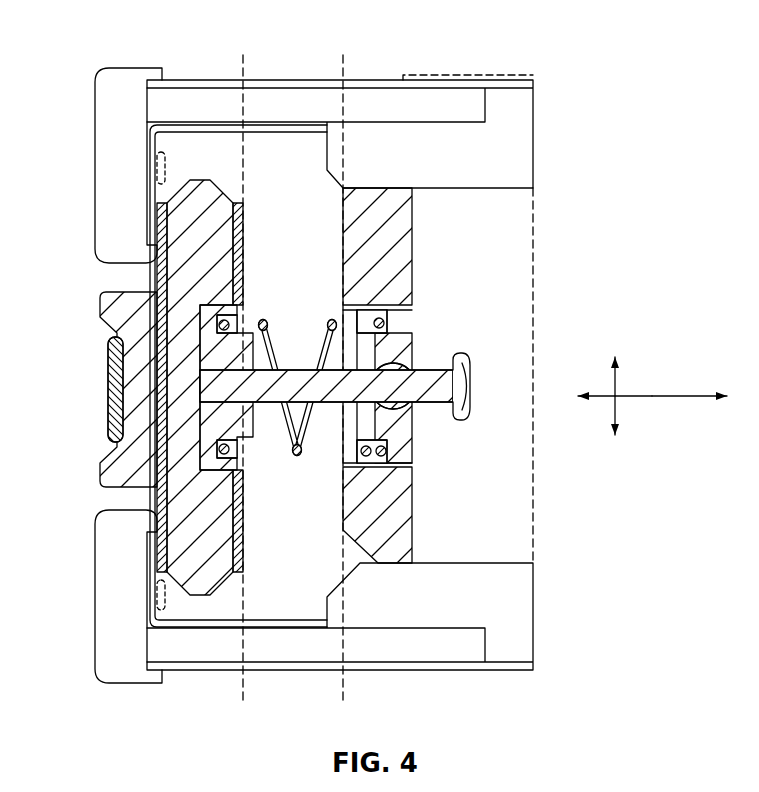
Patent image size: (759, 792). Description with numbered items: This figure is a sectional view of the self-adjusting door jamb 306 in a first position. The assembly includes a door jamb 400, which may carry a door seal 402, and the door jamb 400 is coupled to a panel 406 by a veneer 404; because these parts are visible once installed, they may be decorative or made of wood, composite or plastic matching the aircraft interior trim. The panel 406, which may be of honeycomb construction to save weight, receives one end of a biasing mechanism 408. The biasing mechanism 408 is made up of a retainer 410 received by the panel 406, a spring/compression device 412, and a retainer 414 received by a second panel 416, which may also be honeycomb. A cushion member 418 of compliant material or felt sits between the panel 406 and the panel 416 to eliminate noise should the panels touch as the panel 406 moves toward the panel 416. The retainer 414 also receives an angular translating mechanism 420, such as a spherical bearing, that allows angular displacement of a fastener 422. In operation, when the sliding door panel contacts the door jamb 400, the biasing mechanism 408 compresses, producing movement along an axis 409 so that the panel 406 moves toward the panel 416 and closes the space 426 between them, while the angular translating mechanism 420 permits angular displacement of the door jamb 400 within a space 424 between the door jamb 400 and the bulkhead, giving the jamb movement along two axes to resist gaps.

The self-adjusting door jamb 306 is at (89, 398).
The door jamb 400 is at (116, 474).
The door seal 402 is at (104, 342).
The veneer 404 is at (156, 547).
The panel 406 is at (199, 598).
The biasing mechanism 408 is at (302, 459).
The axis 409 is at (651, 384).
The retainer 410 is at (207, 328).
The spring/compression device 412 is at (330, 322).
The retainer 414 is at (418, 317).
The panel 416 is at (403, 213).
The cushion member 418 is at (239, 575).
The angular translating mechanism 420 is at (414, 421).
The fastener 422 is at (468, 424).
The space 424 is at (100, 255).
The space 426 is at (243, 60).